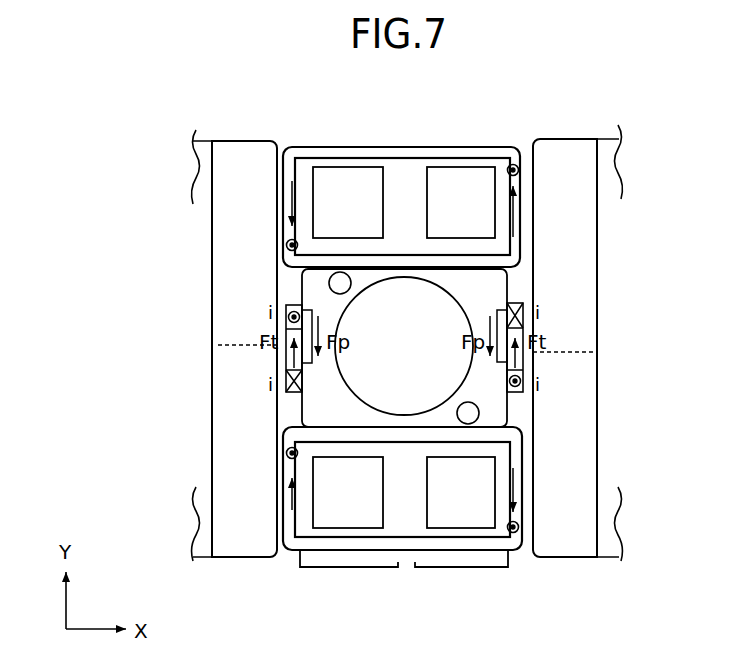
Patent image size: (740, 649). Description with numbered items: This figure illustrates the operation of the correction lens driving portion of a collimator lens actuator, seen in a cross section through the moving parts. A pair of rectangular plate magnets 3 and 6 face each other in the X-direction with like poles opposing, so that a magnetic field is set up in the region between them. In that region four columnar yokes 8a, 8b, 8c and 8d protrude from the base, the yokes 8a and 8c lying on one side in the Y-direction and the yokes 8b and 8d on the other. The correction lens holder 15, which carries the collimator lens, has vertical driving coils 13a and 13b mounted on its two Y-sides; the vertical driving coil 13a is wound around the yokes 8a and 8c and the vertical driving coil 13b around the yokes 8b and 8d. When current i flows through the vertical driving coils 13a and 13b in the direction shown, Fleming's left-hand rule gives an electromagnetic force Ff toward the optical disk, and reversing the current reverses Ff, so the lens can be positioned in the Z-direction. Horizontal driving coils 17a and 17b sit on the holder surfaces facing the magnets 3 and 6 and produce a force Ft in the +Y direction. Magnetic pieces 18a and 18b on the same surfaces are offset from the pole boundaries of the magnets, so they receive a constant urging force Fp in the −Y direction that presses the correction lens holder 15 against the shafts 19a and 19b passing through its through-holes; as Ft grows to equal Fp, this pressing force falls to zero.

The magnet 3 is at (585, 343).
The magnet 6 is at (233, 315).
The yoke 8a is at (348, 200).
The yoke 8b is at (337, 497).
The yoke 8c is at (469, 200).
The yoke 8d is at (456, 497).
The vertical driving coil 13a is at (410, 158).
The vertical driving coil 13b is at (423, 540).
The correction lens holder 15 is at (490, 400).
The horizontal driving coil 17a is at (524, 400).
The horizontal driving coil 17b is at (289, 401).
The magnetic piece 18a is at (522, 301).
The magnetic piece 18b is at (288, 301).
The shaft 19a is at (341, 272).
The shaft 19b is at (470, 424).